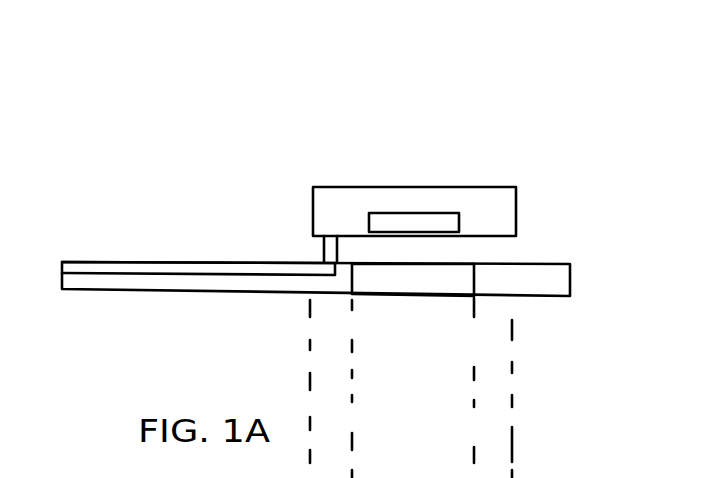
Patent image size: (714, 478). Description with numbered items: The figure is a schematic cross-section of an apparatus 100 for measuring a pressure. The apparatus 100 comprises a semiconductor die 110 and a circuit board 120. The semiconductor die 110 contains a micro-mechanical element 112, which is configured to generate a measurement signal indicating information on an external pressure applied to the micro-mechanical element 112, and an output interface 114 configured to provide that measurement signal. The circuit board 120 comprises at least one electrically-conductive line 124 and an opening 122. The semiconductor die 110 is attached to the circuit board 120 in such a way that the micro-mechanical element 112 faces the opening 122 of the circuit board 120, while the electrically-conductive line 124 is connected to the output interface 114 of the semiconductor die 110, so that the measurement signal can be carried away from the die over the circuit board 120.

The apparatus for measuring a pressure 100 is at (249, 129).
The semiconductor die 110 is at (500, 183).
The micro-mechanical element 112 is at (427, 230).
The output interface 114 is at (321, 248).
The circuit board 120 is at (103, 294).
The opening 122 is at (412, 297).
The electrically-conductive line 124 is at (85, 261).